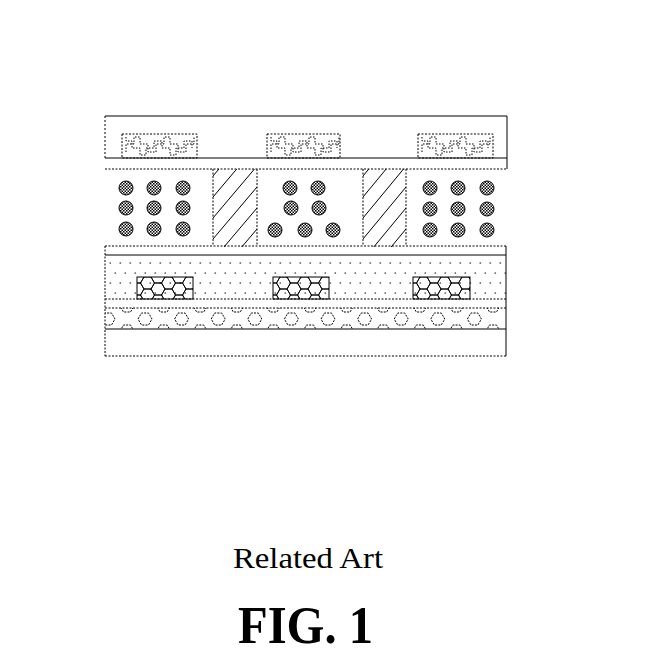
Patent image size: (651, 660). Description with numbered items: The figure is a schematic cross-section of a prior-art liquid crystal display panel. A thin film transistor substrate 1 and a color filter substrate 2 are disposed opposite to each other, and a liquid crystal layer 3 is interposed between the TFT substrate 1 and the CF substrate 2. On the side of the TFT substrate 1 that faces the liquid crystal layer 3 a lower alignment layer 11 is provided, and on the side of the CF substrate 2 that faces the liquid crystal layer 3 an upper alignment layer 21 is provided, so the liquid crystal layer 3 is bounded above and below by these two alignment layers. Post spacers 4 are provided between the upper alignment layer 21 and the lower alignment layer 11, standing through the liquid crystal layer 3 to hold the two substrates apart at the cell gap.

The thin film transistor substrate 1 is at (327, 371).
The lower alignment layer 11 is at (120, 254).
The color filter substrate 2 is at (207, 90).
The upper alignment layer 21 is at (120, 163).
The liquid crystal layer 3 is at (495, 209).
The post spacers 4 is at (380, 193).